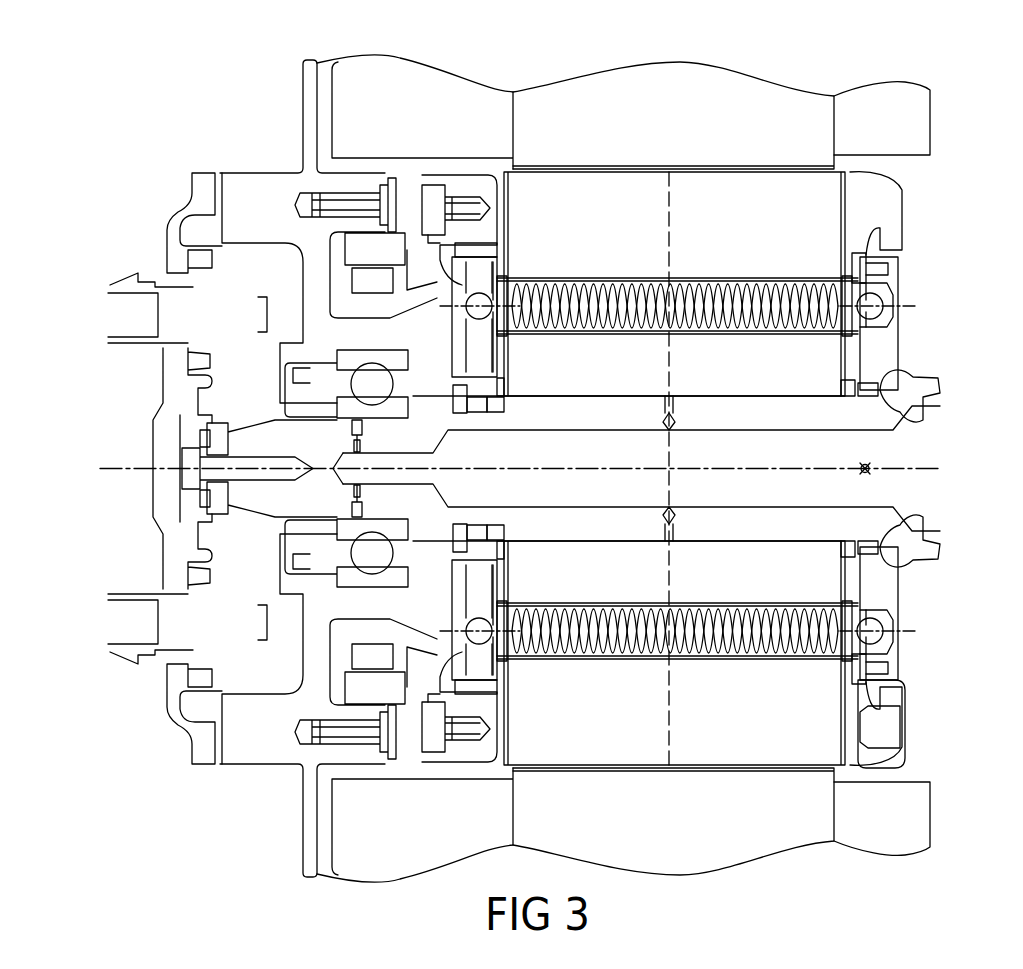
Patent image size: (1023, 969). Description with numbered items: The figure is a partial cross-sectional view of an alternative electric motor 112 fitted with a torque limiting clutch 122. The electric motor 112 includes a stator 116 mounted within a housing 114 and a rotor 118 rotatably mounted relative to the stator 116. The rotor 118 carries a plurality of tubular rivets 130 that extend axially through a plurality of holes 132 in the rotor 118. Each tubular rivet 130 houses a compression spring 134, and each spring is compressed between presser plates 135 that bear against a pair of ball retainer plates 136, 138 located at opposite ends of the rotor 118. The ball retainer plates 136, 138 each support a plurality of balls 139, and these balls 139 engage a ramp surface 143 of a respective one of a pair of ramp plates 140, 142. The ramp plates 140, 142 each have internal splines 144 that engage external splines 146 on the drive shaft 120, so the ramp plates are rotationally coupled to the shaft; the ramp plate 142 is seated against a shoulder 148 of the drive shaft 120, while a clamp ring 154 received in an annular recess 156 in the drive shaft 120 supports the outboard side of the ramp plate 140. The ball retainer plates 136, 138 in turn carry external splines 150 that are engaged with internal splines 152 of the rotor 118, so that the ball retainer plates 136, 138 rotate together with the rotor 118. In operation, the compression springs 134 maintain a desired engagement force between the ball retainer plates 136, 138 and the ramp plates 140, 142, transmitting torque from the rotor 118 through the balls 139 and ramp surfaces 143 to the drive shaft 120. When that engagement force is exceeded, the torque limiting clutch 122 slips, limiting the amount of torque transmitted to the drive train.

The electric motor 112 is at (915, 84).
The housing 114 is at (310, 110).
The stator 116 is at (767, 102).
The rotor 118 is at (800, 185).
The drive shaft 120 is at (898, 412).
The torque limiting clutch 122 is at (883, 190).
The tubular rivets 130 is at (684, 262).
The holes 132 is at (765, 275).
The compression spring 134 is at (645, 277).
The presser plates 135 is at (507, 279).
The ball retainer plate 136 is at (458, 258).
The ball retainer plate 138 is at (880, 259).
The balls 139 is at (472, 292).
The ramp plate 140 is at (470, 362).
The ramp plate 142 is at (885, 350).
The ramp surface 143 is at (470, 330).
The internal splines 144 is at (477, 402).
The external splines 146 is at (505, 402).
The shoulder 148 is at (896, 416).
The external splines 150 is at (493, 268).
The internal splines 152 is at (466, 270).
The clamp ring 154 is at (462, 397).
The annular recess 156 is at (465, 400).